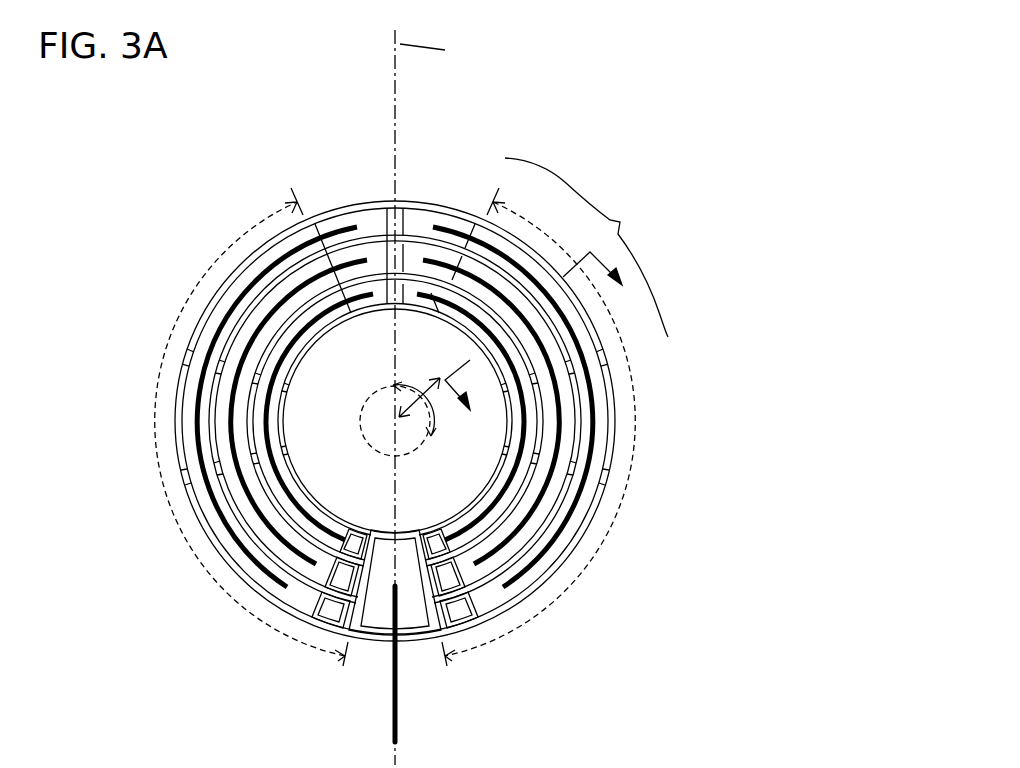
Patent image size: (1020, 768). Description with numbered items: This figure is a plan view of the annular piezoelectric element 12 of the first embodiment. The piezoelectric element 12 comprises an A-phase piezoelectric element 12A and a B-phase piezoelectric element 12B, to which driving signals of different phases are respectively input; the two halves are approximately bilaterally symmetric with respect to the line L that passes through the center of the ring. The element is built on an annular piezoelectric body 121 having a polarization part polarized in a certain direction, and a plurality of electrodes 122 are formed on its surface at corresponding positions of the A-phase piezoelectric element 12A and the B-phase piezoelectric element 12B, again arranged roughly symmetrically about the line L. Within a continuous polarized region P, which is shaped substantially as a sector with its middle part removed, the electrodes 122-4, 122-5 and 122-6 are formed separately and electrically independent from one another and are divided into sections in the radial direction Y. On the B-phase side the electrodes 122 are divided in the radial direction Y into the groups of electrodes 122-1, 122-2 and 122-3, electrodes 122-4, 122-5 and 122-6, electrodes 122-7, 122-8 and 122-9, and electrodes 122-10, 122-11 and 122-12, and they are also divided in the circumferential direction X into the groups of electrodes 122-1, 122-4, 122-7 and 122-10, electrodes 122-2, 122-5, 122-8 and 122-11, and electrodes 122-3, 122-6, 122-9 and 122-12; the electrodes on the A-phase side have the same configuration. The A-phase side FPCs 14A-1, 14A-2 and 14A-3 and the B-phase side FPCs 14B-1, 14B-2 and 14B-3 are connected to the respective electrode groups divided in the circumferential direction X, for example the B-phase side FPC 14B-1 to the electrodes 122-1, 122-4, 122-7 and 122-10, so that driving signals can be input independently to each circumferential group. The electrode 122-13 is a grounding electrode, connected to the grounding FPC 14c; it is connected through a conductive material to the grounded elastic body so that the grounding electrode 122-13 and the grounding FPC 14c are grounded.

The piezoelectric element 12 is at (629, 122).
The A-phase piezoelectric element 12A is at (157, 432).
The B-phase piezoelectric element 12B is at (620, 597).
The A-phase side FPC 14A-1 is at (225, 519).
The A-phase side FPC 14A-2 is at (268, 528).
The A-phase side FPC 14A-3 is at (305, 515).
The B-phase side FPC 14B-1 is at (566, 519).
The B-phase side FPC 14B-2 is at (522, 530).
The B-phase side FPC 14B-3 is at (485, 535).
The grounding FPC 14c is at (400, 715).
The piezoelectric body 121 is at (243, 258).
The electrodes 122 is at (372, 294).
The electrode 122-1 is at (435, 292).
The electrode 122-2 is at (422, 250).
The electrode 122-3 is at (412, 208).
The electrode 122-4 is at (535, 383).
The electrode 122-5 is at (560, 365).
The electrode 122-6 is at (590, 350).
The electrode 122-7 is at (530, 428).
The electrode 122-8 is at (568, 447).
The electrode 122-9 is at (597, 465).
The electrode 122-10 is at (500, 595).
The electrode 122-11 is at (468, 577).
The electrode 122-12 is at (440, 550).
The grounding electrode 122-13 is at (380, 623).